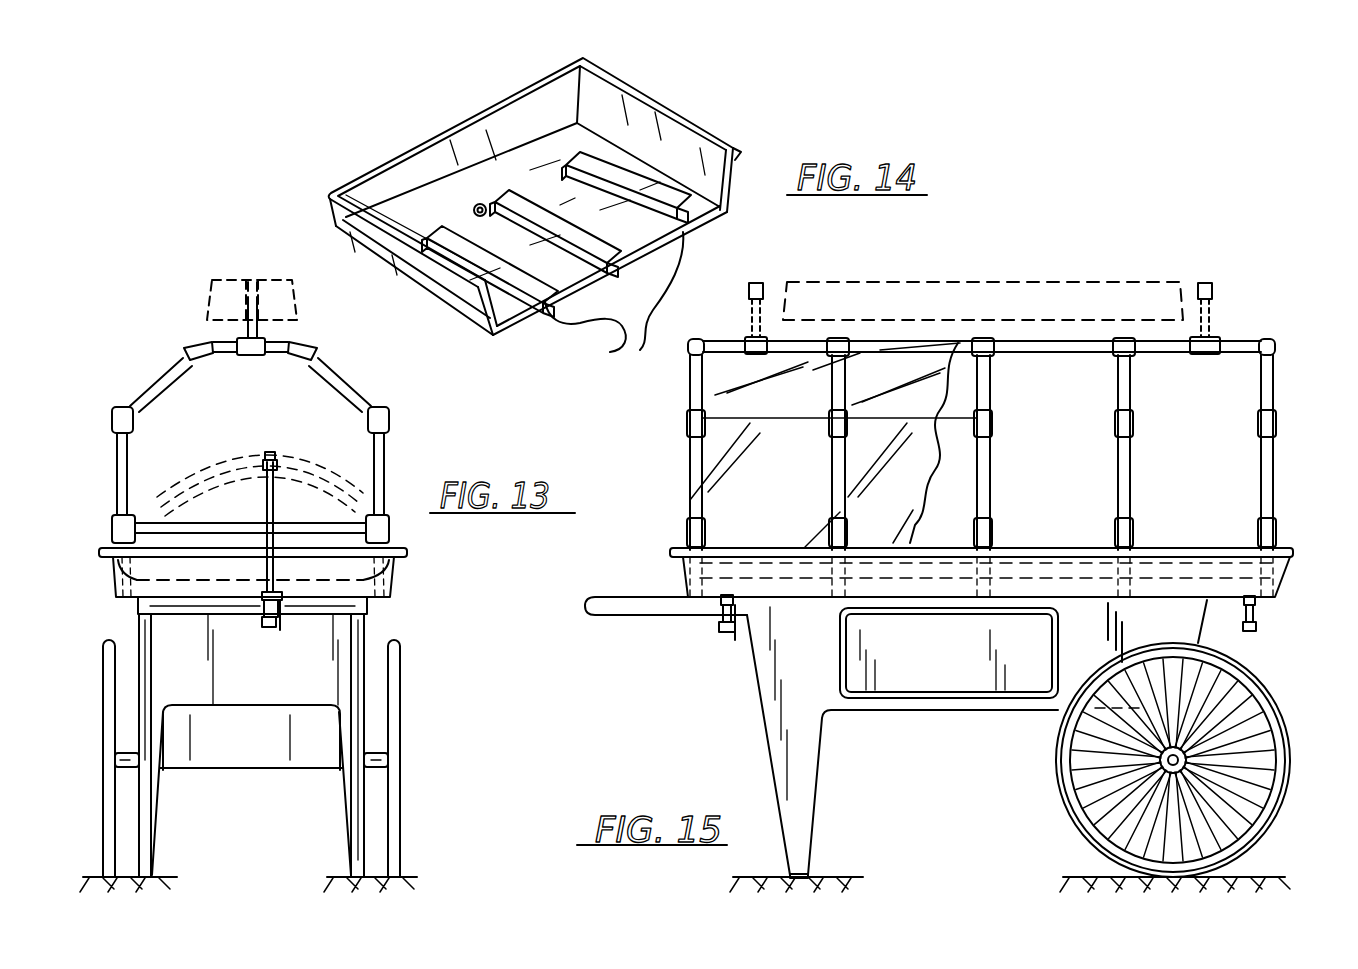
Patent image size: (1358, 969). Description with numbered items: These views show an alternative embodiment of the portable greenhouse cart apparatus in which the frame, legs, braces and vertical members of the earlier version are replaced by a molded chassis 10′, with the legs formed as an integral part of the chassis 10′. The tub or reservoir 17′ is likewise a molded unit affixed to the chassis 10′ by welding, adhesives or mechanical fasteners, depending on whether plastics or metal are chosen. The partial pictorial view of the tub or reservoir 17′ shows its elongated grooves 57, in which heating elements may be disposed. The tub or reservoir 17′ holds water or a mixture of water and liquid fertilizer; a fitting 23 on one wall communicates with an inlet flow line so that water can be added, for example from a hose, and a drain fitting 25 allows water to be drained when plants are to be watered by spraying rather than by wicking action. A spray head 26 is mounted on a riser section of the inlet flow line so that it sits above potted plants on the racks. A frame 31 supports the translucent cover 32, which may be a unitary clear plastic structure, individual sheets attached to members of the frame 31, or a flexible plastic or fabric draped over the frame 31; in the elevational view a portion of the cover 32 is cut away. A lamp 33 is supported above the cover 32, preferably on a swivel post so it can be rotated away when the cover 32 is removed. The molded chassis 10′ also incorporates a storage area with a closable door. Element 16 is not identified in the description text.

In FIG. 13, the chassis 10′ is at (284, 677).
In FIG. 13, the upright post 16 is at (397, 667).
In FIG. 14, the tub or reservoir 17′ is at (637, 90).
In FIG. 15, the fitting 23 is at (718, 622).
In FIG. 15, the drain fitting 25 is at (1258, 612).
In FIG. 13, the spray head 26 is at (272, 480).
In FIG. 15, the frame 31 is at (1253, 380).
In FIG. 15, the translucent cover 32 is at (787, 500).
In FIG. 15, the lamp 33 is at (1013, 282).
In FIG. 14, the elongated grooves 57 is at (620, 346).